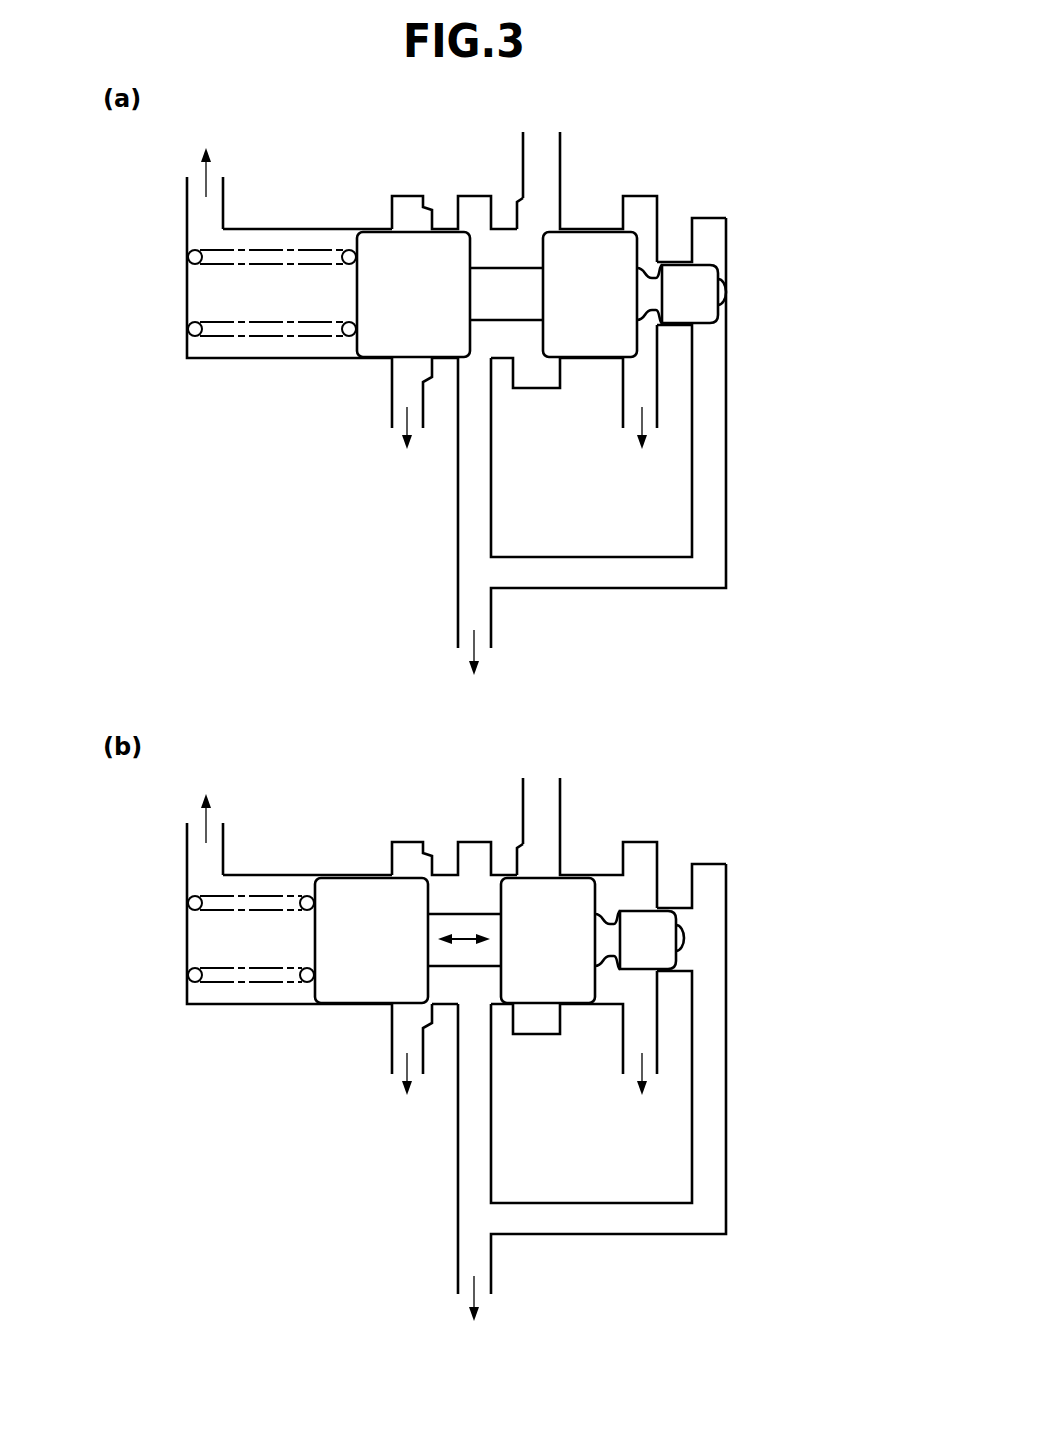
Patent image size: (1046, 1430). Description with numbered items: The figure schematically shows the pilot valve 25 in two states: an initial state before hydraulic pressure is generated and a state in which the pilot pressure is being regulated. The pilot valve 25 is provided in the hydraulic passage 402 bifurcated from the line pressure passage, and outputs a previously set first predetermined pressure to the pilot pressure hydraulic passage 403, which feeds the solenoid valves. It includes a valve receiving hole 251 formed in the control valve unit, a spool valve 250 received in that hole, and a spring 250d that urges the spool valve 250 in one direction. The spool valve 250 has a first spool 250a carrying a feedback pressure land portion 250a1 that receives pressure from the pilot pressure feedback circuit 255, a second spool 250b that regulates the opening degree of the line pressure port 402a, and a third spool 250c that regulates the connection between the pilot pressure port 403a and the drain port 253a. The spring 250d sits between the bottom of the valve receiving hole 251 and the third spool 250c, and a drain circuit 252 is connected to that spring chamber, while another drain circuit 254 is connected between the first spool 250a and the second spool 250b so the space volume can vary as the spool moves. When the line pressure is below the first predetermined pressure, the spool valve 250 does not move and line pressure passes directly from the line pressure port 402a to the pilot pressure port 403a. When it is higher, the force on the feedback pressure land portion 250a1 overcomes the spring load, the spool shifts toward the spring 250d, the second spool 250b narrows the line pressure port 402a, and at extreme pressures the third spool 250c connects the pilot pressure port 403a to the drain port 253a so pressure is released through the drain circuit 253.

The pilot valve 25 is at (698, 170).
The spool valve 250 is at (738, 322).
The first spool 250a is at (697, 296).
The feedback pressure land portion 250a1 is at (725, 278).
The second spool 250b is at (588, 242).
The third spool 250c is at (405, 243).
The spring 250d is at (233, 265).
The valve receiving hole 251 is at (215, 357).
The drain circuit 252 is at (224, 203).
The drain circuit 253 is at (390, 405).
The drain port 253a is at (412, 360).
The drain circuit 254 is at (622, 390).
The pilot pressure feedback circuit 255 is at (727, 423).
The hydraulic passage 402 is at (520, 136).
The line pressure port 402a is at (539, 227).
The pilot pressure hydraulic passage 403 is at (457, 623).
The pilot pressure port 403a is at (475, 361).